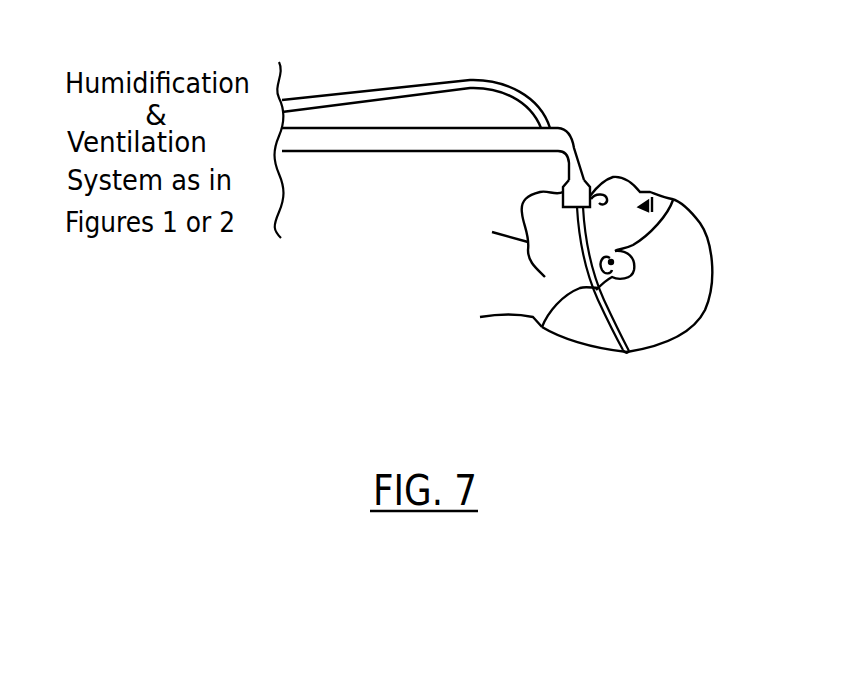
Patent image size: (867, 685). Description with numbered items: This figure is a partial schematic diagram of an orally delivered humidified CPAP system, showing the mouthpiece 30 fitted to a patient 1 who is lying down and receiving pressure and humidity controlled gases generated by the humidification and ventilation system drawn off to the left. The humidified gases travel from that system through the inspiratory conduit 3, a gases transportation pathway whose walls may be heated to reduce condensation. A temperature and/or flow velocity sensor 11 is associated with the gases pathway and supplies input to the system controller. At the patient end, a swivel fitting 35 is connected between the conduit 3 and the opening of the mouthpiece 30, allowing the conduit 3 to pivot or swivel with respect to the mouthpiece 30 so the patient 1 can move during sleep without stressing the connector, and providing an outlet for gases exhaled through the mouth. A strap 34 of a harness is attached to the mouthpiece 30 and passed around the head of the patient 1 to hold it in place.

The patient 1 is at (595, 348).
The inspiratory conduit 3 is at (432, 152).
The temperature and/or flow velocity sensor 11 is at (548, 117).
The mouthpiece 30 is at (588, 182).
The strap 34 is at (618, 330).
The swivel fitting 35 is at (580, 163).